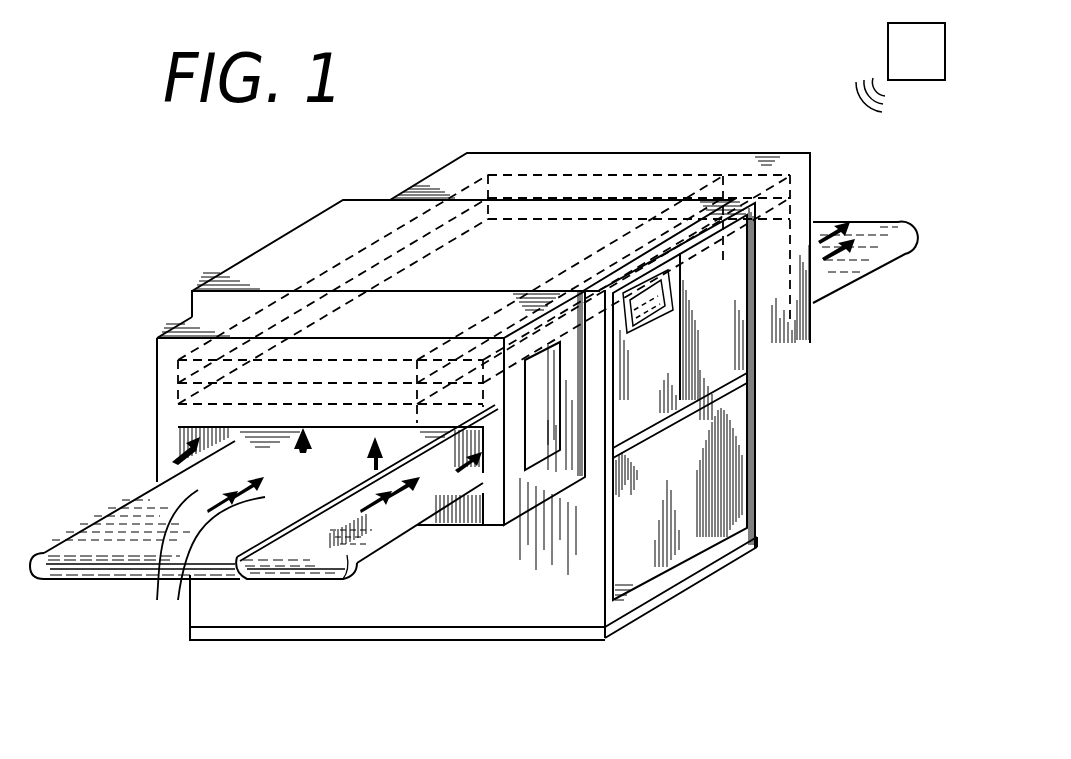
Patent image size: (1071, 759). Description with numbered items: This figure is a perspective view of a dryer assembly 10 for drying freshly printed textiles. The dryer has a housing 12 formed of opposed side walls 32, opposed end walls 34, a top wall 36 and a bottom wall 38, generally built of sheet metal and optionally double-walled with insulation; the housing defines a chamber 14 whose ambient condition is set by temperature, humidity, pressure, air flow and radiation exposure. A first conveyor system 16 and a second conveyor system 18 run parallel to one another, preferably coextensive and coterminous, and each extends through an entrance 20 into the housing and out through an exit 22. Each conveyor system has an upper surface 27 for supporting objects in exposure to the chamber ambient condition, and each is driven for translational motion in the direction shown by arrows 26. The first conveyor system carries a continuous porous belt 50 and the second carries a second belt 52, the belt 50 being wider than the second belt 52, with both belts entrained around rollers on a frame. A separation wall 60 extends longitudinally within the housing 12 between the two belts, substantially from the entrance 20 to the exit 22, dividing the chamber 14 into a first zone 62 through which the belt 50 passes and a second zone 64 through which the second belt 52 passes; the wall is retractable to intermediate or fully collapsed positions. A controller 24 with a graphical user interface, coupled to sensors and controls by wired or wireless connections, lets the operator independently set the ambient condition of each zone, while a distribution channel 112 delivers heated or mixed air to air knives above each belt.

The dryer assembly 10 is at (298, 205).
The housing 12 is at (778, 333).
The chamber 14 is at (172, 470).
The first conveyor system 16 is at (108, 520).
The second conveyor system 18 is at (376, 468).
The entrance 20 is at (350, 527).
The exit 22 is at (828, 226).
The controller 24 is at (900, 55).
The arrows 26 is at (202, 561).
The upper surface 27 is at (93, 545).
The side walls 32 is at (707, 350).
The end walls 34 is at (590, 572).
The top wall 36 is at (265, 272).
The bottom wall 38 is at (680, 598).
The belt 50 is at (105, 565).
The second belt 52 is at (300, 560).
The separation wall 60 is at (420, 448).
The first zone 62 is at (302, 445).
The second zone 64 is at (452, 462).
The distribution channel 112 is at (555, 208).